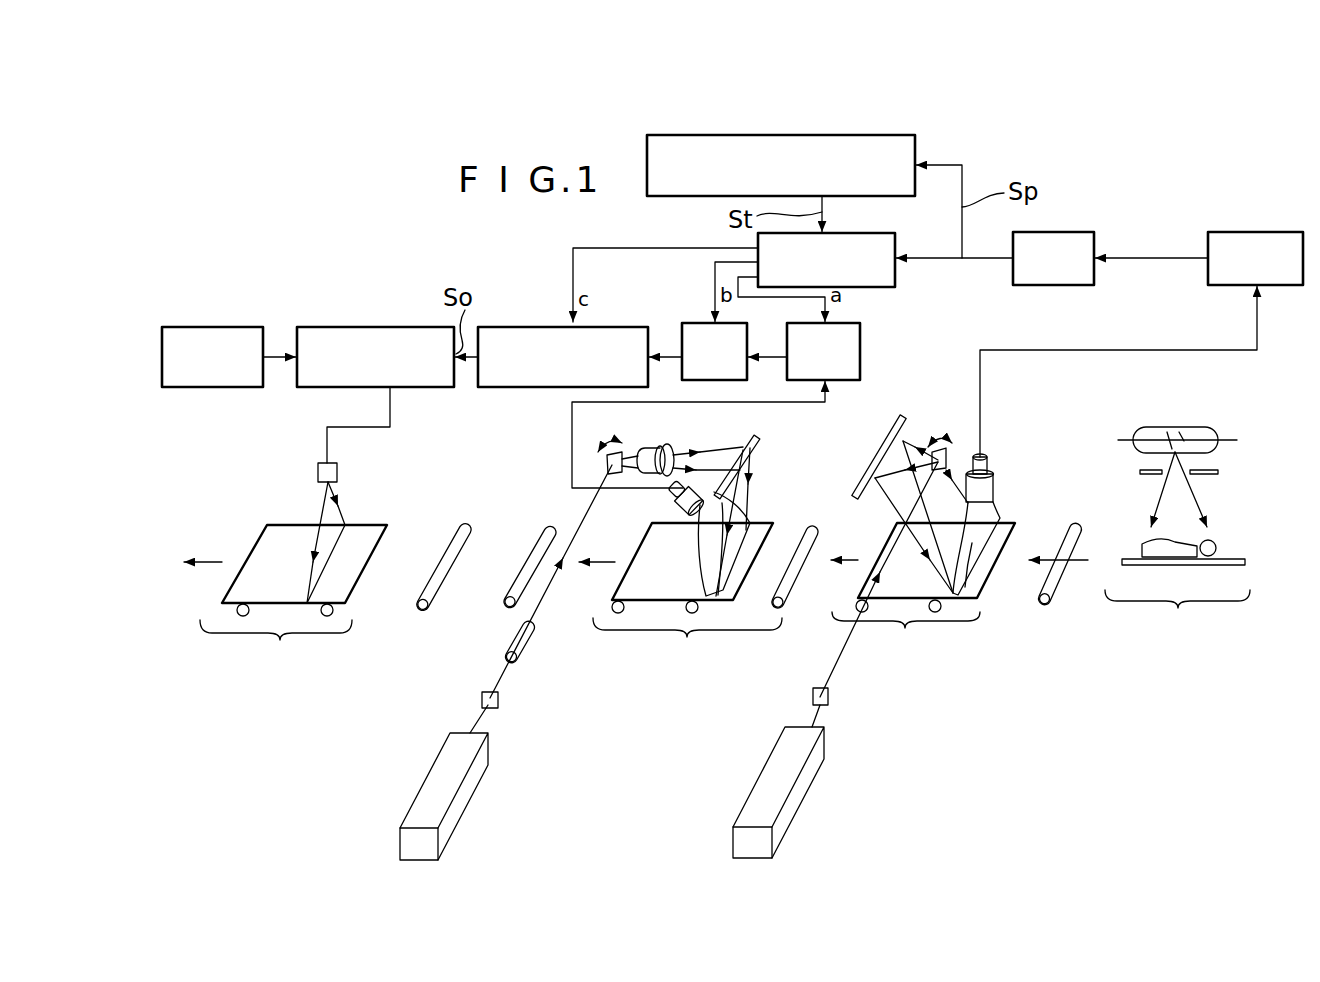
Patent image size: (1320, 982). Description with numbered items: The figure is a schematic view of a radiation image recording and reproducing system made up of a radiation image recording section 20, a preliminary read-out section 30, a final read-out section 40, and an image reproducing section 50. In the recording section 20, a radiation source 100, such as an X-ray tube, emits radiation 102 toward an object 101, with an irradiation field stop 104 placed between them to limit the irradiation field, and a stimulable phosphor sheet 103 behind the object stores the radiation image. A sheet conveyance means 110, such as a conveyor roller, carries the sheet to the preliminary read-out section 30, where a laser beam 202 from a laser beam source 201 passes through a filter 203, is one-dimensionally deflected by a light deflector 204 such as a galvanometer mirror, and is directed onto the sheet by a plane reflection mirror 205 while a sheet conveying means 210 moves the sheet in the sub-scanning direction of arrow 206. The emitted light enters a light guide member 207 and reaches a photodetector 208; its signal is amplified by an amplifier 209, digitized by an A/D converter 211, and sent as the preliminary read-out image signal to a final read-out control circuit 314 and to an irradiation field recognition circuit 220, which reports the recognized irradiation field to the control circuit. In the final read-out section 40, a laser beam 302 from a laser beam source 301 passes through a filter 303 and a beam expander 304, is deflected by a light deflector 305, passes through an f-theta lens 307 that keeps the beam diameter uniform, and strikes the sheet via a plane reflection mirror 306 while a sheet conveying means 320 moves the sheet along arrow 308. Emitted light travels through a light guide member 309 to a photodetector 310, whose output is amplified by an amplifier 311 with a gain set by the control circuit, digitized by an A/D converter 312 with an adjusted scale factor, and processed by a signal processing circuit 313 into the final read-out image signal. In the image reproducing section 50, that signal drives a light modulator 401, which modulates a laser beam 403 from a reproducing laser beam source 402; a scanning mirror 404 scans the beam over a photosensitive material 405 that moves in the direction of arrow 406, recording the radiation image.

The radiation image recording section 20 is at (1177, 613).
The preliminary read-out section 30 is at (906, 636).
The final read-out section 40 is at (687, 642).
The image reproducing section 50 is at (276, 647).
The radiation source 100 is at (1208, 427).
The object 101 is at (1145, 546).
The radiation 102 is at (1160, 493).
The stimulable phosphor sheet 103 is at (1232, 567).
The irradiation field stop 104 is at (1155, 470).
The sheet conveyance means 110 is at (1055, 583).
The laser beam source 201 is at (808, 775).
The laser beam 202 is at (812, 715).
The filter 203 is at (830, 695).
The light deflector 204 is at (948, 452).
The plane reflection mirror 205 is at (886, 435).
The arrow 206 is at (844, 558).
The light guide member 207 is at (982, 515).
The photodetector 208 is at (994, 478).
The amplifier 209 is at (1253, 232).
The sheet conveying means 210 is at (938, 613).
The A/D converter 211 is at (1059, 232).
The irradiation field recognition circuit 220 is at (692, 198).
The laser beam source 301 is at (475, 778).
The laser beam 302 is at (482, 718).
The filter 303 is at (500, 698).
The beam expander 304 is at (529, 644).
The light deflector 305 is at (621, 452).
The plane reflection mirror 306 is at (757, 441).
The f-theta lens 307 is at (666, 447).
The arrow 308 is at (602, 560).
The light guide member 309 is at (735, 518).
The photodetector 310 is at (680, 500).
The amplifier 311 is at (860, 340).
The A/D converter 312 is at (688, 323).
The signal processing circuit 313 is at (525, 327).
The final read-out control circuit 314 is at (845, 233).
The sheet conveying means 320 is at (700, 614).
The light modulator 401 is at (394, 327).
The reproducing laser beam source 402 is at (243, 327).
The laser beam 403 is at (280, 366).
The scanning mirror 404 is at (338, 476).
The photosensitive material 405 is at (286, 540).
The arrow 406 is at (208, 556).